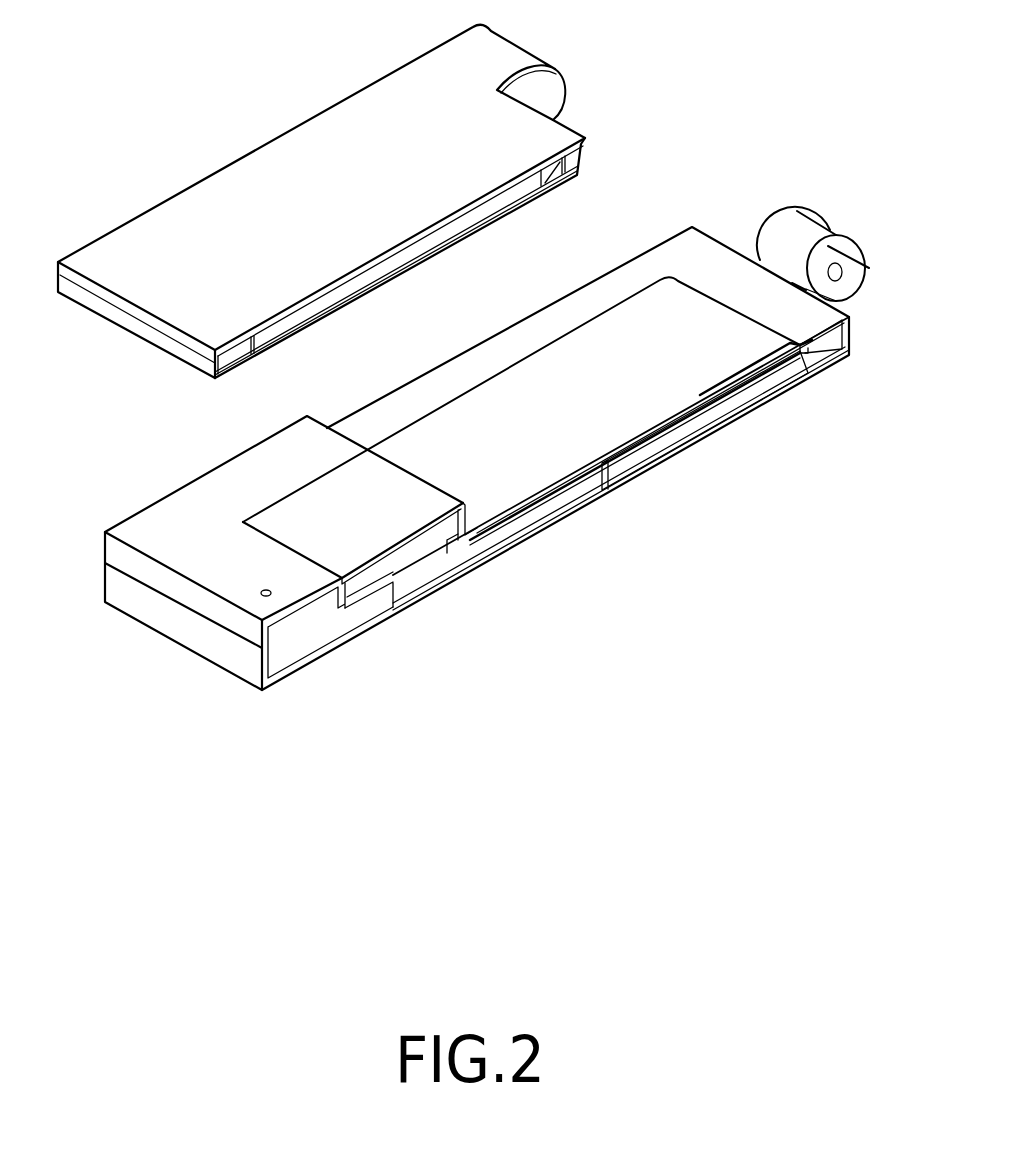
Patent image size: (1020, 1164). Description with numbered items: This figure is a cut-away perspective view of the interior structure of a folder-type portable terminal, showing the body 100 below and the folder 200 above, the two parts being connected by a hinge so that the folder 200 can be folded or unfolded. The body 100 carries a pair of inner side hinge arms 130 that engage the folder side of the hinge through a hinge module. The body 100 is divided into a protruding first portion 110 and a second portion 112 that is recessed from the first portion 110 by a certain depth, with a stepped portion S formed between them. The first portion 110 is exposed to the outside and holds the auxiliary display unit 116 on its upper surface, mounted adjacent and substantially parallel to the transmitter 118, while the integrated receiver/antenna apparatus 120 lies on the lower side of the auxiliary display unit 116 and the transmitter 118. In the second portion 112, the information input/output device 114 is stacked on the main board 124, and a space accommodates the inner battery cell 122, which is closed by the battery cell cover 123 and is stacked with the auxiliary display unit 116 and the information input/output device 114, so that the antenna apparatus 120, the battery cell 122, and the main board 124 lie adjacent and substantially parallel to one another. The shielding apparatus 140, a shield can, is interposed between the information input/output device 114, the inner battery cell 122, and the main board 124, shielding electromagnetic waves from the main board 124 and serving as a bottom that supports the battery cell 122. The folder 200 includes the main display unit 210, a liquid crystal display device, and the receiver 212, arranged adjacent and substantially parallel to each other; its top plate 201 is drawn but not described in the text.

The body 100 is at (470, 450).
The first portion 110 is at (470, 468).
The second portion 112 is at (672, 248).
The information input/output device 114 is at (712, 385).
The auxiliary display unit 116 is at (405, 520).
The transmitter 118 is at (293, 620).
The integrated receiver/antenna apparatus 120 is at (353, 612).
The inner battery cell 122 is at (578, 505).
The battery cell cover 123 is at (522, 545).
The main board 124 is at (678, 465).
The inner side hinge arms 130 is at (823, 218).
The shielding apparatus 140 is at (805, 350).
The folder 200 is at (321, 231).
The cover top plate 201 is at (190, 195).
The main display unit 210 is at (430, 240).
The receiver 212 is at (232, 355).
The stepped portion S is at (403, 468).